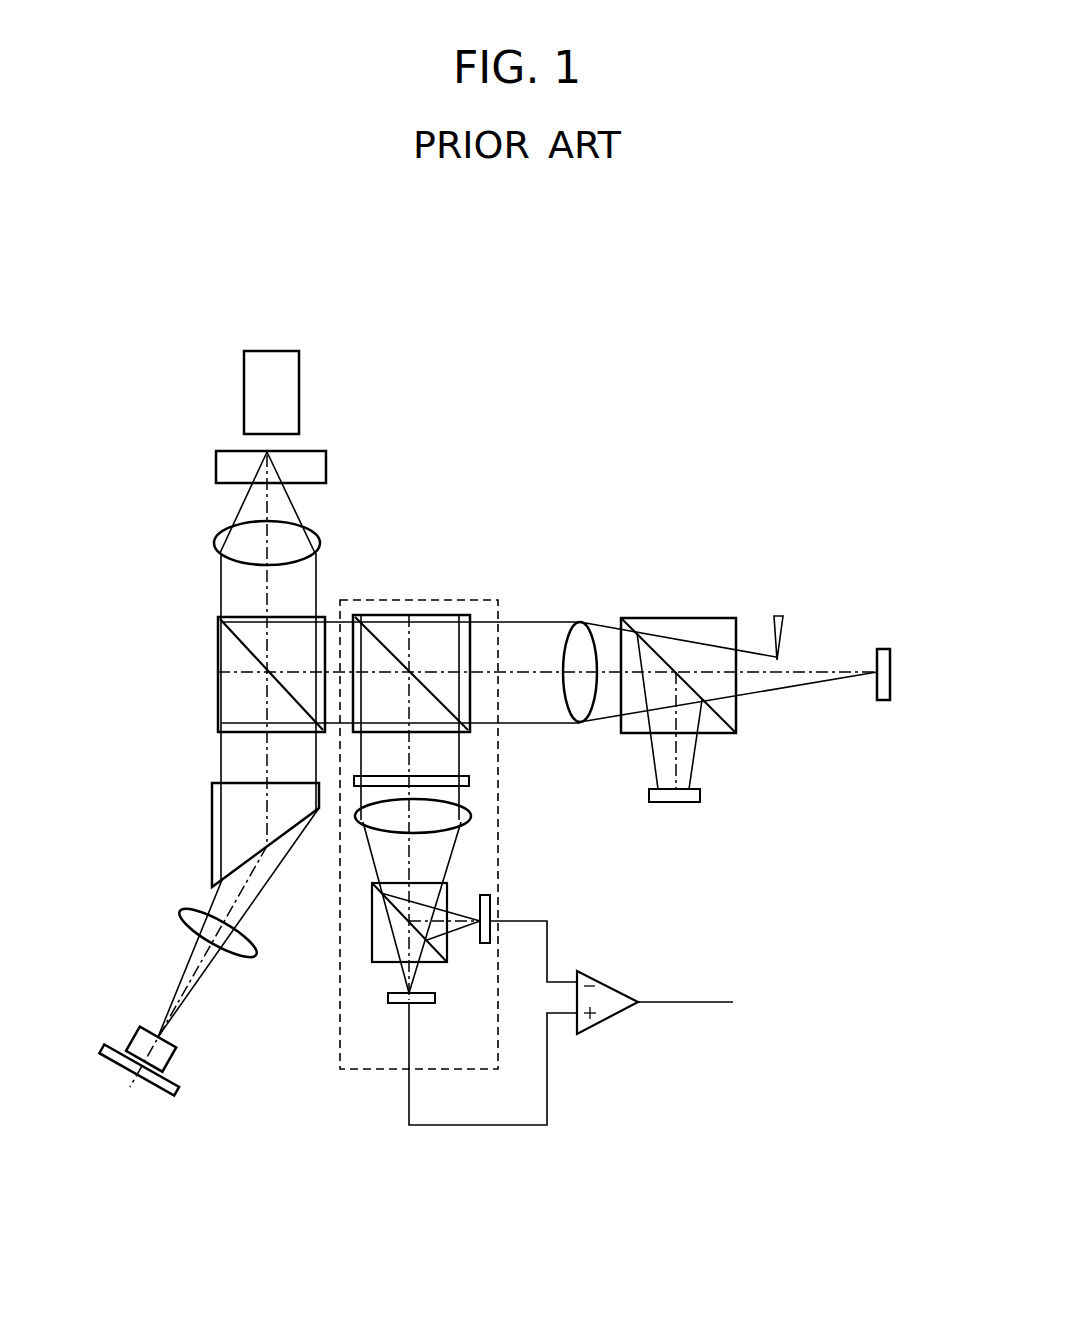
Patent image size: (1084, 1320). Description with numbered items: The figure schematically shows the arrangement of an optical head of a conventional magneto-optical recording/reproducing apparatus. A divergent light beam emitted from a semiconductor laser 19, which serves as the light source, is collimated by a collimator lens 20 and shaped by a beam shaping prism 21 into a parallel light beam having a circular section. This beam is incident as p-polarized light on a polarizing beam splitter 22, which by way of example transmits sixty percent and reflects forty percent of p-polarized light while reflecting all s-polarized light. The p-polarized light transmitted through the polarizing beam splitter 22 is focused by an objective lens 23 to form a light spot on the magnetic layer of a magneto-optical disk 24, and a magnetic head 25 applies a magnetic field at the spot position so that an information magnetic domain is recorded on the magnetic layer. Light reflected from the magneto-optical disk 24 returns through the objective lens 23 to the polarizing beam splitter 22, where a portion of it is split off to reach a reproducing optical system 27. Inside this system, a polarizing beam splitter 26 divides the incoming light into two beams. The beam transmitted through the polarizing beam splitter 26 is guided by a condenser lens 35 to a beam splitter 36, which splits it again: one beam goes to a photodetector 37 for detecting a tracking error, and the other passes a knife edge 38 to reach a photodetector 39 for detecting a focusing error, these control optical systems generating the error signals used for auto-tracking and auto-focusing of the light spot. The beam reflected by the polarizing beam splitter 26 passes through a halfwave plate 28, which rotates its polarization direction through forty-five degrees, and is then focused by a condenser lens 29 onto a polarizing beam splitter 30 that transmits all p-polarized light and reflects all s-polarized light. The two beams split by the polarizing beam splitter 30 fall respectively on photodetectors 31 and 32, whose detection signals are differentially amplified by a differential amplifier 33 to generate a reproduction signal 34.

The semiconductor laser 19 is at (106, 1046).
The collimator lens 20 is at (183, 917).
The beam shaping prism 21 is at (211, 836).
The polarizing beam splitter 22 is at (216, 667).
The objective lens 23 is at (320, 546).
The magneto-optical disk 24 is at (327, 467).
The magnetic head 25 is at (300, 389).
The polarizing beam splitter 26 is at (422, 613).
The reproducing optical system 27 is at (366, 1070).
The halfwave plate 28 is at (470, 781).
The condenser lens 29 is at (471, 815).
The polarizing beam splitter 30 is at (448, 950).
The photodetector 31 is at (491, 897).
The photodetector 32 is at (436, 1001).
The differential amplifier 33 is at (600, 1035).
The reproduction signal 34 is at (700, 1003).
The condenser lens 35 is at (580, 622).
The beam splitter 36 is at (716, 618).
The photodetector 37 is at (701, 795).
The knife edge 38 is at (780, 615).
The photodetector 39 is at (886, 648).